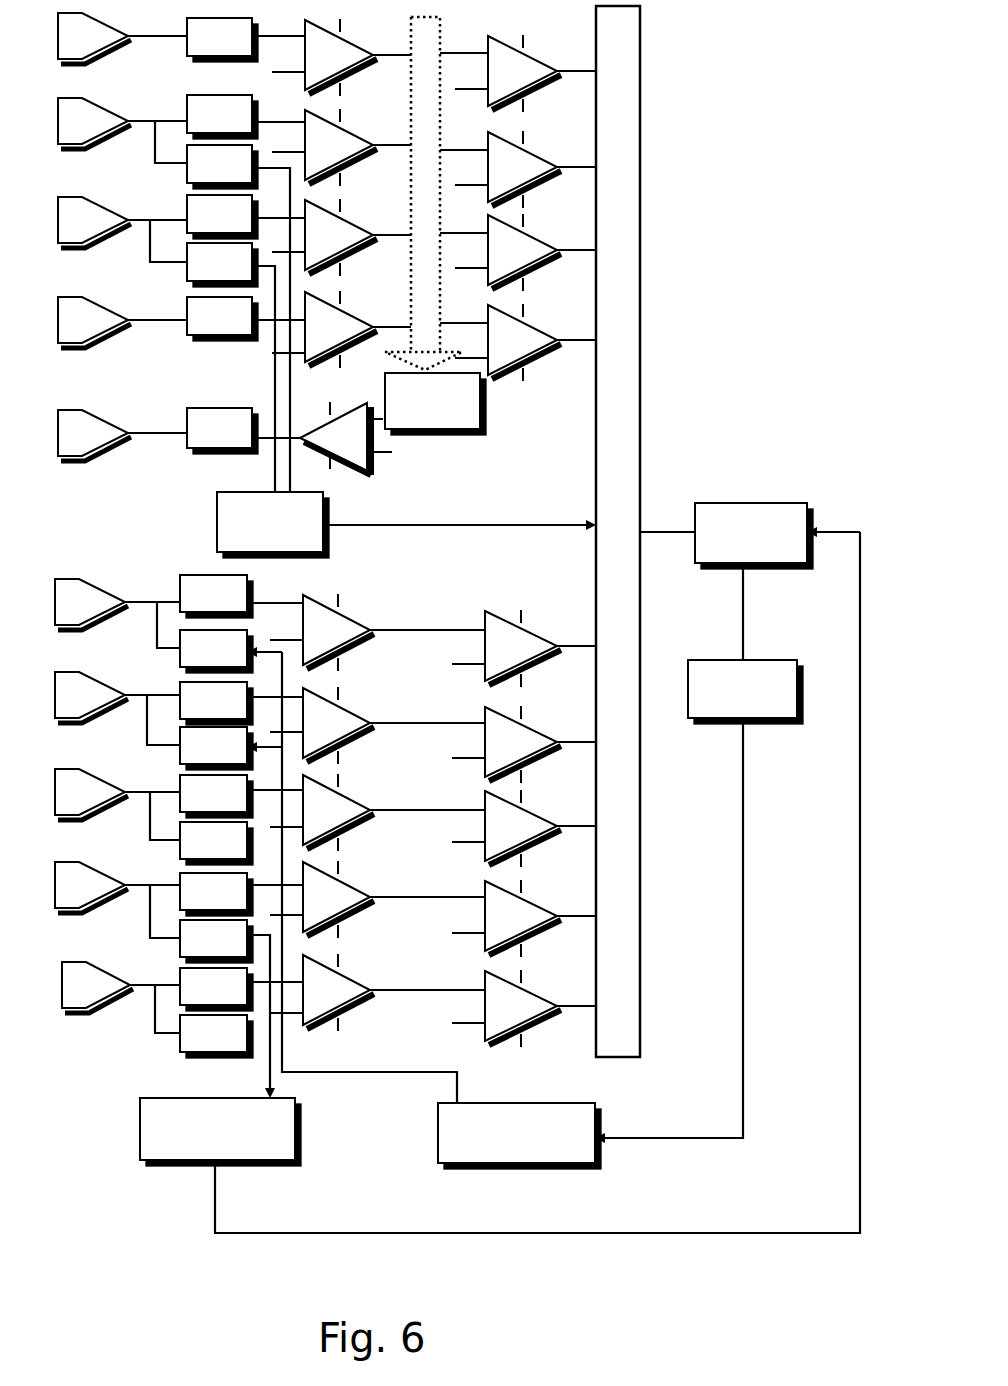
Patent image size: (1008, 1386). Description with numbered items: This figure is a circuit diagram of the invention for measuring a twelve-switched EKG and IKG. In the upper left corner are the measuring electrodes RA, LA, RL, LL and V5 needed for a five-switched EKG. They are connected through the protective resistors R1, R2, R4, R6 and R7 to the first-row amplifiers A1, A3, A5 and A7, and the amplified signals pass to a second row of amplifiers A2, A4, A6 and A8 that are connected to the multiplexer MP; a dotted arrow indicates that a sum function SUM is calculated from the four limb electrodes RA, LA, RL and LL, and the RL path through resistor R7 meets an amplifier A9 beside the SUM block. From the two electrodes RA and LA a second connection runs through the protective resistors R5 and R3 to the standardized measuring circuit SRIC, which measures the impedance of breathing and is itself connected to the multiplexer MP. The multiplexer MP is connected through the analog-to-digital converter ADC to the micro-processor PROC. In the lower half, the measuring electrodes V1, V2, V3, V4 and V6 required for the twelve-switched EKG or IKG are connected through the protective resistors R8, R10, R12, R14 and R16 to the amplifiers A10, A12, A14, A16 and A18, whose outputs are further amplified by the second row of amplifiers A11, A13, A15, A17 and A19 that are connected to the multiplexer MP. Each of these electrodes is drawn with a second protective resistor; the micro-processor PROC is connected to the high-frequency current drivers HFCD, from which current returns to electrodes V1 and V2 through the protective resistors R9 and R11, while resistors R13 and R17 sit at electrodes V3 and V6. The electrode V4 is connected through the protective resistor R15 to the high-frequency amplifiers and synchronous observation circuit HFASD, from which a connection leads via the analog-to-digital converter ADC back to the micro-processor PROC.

The measuring electrode LL is at (98, 24).
The measuring electrode LA is at (95, 108).
The measuring electrode RA is at (95, 206).
The measuring electrode RL is at (95, 416).
The measuring electrode V1 is at (95, 584).
The measuring electrode V2 is at (95, 678).
The measuring electrode V3 is at (95, 772).
The measuring electrode V4 is at (95, 866).
The measuring electrode V5 is at (90, 303).
The measuring electrode V6 is at (100, 968).
The multiplexer MP is at (640, 36).
The protective resistor R1 is at (222, 40).
The protective resistor R2 is at (222, 117).
The protective resistor R3 is at (222, 167).
The protective resistor R4 is at (222, 217).
The protective resistor R5 is at (222, 265).
The protective resistor R6 is at (222, 319).
The protective resistor R7 is at (222, 431).
The protective resistor R8 is at (216, 596).
The protective resistor R9 is at (216, 651).
The protective resistor R10 is at (216, 703).
The protective resistor R11 is at (216, 748).
The protective resistor R12 is at (216, 796).
The protective resistor R13 is at (216, 843).
The protective resistor R14 is at (216, 894).
The protective resistor R15 is at (216, 941).
The protective resistor R16 is at (216, 989).
The protective resistor R17 is at (216, 1036).
The amplifier A1 is at (324, 57).
The amplifier A2 is at (508, 73).
The amplifier A3 is at (324, 147).
The amplifier A4 is at (508, 169).
The amplifier A5 is at (324, 237).
The amplifier A6 is at (508, 252).
The amplifier A7 is at (324, 329).
The amplifier A8 is at (508, 342).
The amplifier A9 is at (335, 438).
The amplifier A10 is at (322, 632).
The amplifier A11 is at (506, 648).
The amplifier A12 is at (322, 725).
The amplifier A13 is at (506, 744).
The amplifier A14 is at (322, 812).
The amplifier A15 is at (506, 828).
The amplifier A16 is at (322, 899).
The amplifier A17 is at (506, 918).
The amplifier A18 is at (322, 992).
The amplifier A19 is at (506, 1008).
The sum function SUM is at (435, 404).
The standardized measuring circuit SRIC is at (273, 525).
The analog-to-digital converter ADC is at (754, 536).
The micro-processor PROC is at (745, 692).
The high-frequency amplifier and synchronous observation circuit HFASD is at (220, 1132).
The high-frequency current drivers HFCD is at (519, 1136).